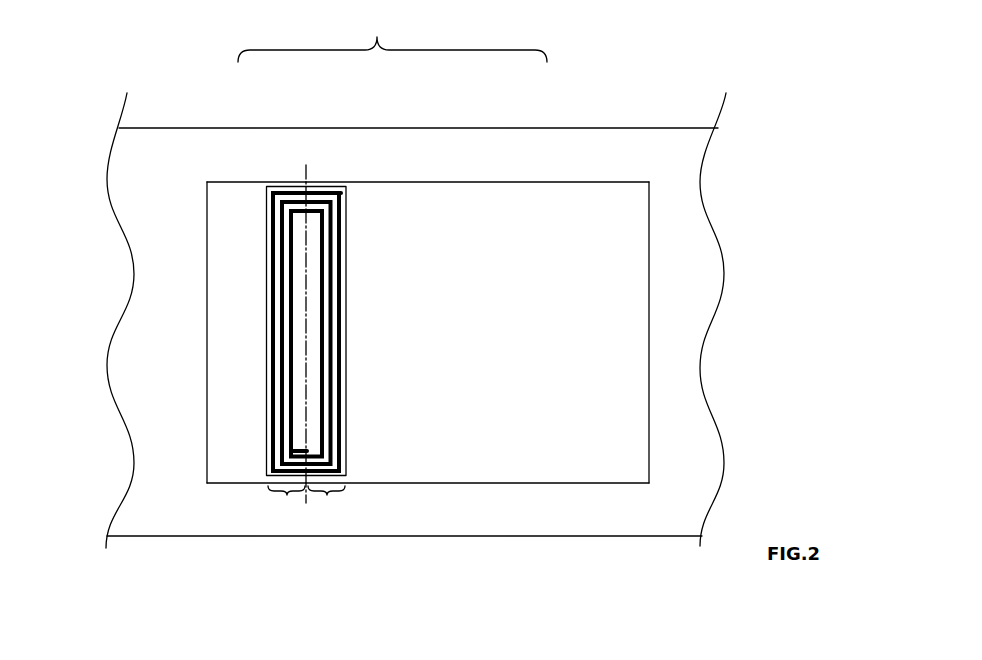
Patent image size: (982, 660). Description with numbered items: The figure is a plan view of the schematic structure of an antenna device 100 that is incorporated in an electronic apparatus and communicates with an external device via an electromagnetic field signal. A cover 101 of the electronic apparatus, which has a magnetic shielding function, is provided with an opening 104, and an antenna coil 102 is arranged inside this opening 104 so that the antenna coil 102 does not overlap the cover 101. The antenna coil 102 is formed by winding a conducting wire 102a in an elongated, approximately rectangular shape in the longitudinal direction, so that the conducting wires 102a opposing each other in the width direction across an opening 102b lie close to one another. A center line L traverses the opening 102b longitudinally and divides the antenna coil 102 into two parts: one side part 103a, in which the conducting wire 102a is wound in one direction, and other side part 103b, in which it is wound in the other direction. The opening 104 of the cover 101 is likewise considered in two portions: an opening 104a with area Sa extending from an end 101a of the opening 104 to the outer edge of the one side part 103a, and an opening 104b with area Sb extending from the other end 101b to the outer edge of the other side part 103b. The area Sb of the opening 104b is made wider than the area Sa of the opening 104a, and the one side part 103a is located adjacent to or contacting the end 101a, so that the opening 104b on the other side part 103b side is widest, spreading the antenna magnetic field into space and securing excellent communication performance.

The antenna device 100 is at (800, 28).
The cover 101 is at (673, 152).
The end of the opening 101a is at (207, 311).
The other end of the opening 101b is at (649, 300).
The antenna coil 102 is at (353, 337).
The conducting wire 102a is at (340, 190).
The opening 102b is at (313, 270).
The one side part 103a is at (282, 353).
The other side part 103b is at (332, 353).
The opening 104 is at (392, 36).
The opening at the one side part side 104a is at (252, 203).
The opening at the other side part side 104b is at (529, 203).
The center line L is at (306, 420).